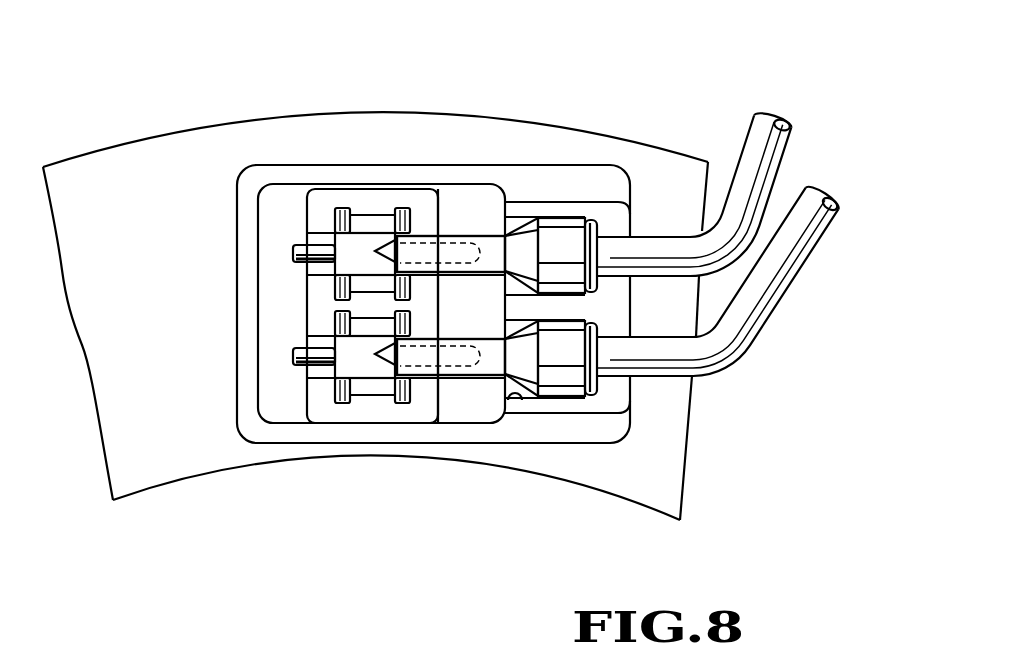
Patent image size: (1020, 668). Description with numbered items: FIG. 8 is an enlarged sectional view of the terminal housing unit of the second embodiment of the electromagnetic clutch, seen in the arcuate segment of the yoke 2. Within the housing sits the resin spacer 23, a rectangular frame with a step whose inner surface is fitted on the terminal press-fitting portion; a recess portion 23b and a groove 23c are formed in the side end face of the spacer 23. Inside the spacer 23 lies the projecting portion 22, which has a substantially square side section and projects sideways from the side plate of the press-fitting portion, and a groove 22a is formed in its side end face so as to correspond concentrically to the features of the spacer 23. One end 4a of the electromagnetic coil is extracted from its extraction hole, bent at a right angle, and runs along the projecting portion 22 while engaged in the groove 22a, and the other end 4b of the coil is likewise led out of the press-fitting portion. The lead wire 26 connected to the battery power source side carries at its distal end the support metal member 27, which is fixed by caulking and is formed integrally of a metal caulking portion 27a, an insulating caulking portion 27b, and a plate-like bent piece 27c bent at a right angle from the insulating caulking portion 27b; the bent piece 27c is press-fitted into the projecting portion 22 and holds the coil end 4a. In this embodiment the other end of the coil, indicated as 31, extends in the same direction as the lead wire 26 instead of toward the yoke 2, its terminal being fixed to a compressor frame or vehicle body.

The yoke 2 is at (212, 116).
The one end of the electromagnetic coil 4a is at (305, 366).
The other end of the electromagnetic coil 4b is at (300, 244).
The projecting portion 22 is at (448, 213).
The groove 22a is at (325, 395).
The resin spacer 23 is at (234, 448).
The recess portion 23b is at (519, 402).
The groove 23c is at (613, 377).
The lead wire 26 is at (757, 293).
The support metal member 27 is at (491, 216).
The metal caulking portion 27a is at (560, 374).
The insulating caulking portion 27b is at (455, 377).
The bent piece 27c is at (396, 400).
The other end of the electromagnetic coil 31 is at (752, 160).